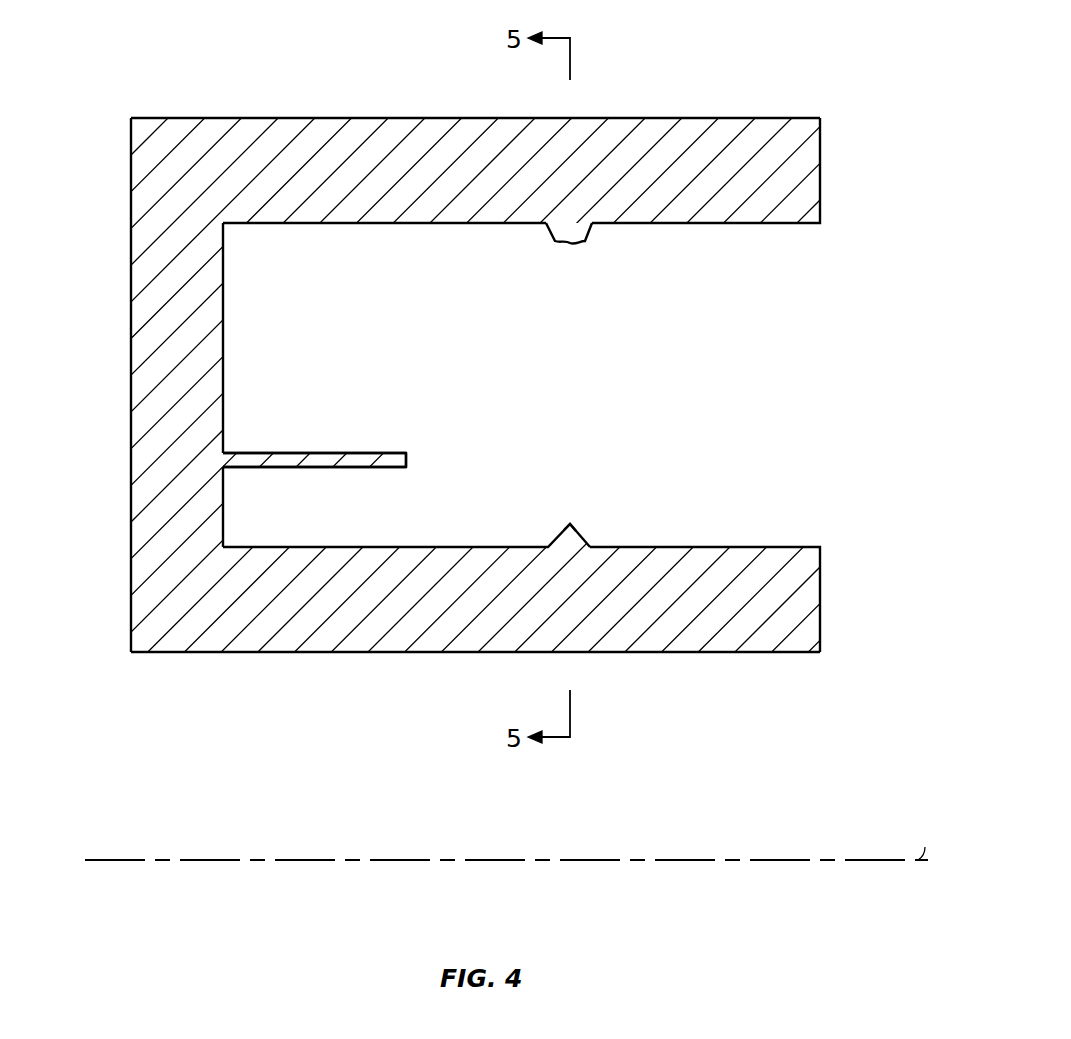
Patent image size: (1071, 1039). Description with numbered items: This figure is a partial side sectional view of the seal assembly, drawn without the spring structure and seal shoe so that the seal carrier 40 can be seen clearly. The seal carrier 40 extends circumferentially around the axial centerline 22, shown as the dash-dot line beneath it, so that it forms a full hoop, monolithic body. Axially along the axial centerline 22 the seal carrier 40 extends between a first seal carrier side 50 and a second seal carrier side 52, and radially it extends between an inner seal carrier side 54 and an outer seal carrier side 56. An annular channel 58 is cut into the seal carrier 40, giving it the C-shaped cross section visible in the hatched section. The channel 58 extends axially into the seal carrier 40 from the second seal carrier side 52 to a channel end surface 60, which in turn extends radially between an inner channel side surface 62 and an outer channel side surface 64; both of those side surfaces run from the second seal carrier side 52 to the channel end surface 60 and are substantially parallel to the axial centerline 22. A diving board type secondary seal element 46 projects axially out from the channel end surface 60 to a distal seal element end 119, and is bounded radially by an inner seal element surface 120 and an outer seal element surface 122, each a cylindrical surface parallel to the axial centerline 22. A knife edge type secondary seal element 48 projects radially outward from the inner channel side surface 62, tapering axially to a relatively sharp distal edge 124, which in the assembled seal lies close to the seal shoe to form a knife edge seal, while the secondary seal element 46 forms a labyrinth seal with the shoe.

The seal carrier 40 is at (816, 74).
The first seal carrier side 50 is at (131, 173).
The second seal carrier side 52 is at (820, 173).
The inner seal carrier side 54 is at (220, 652).
The outer seal carrier side 56 is at (210, 117).
The channel 58 is at (771, 335).
The channel end surface 60 is at (223, 318).
The inner channel side surface 62 is at (801, 547).
The outer channel side surface 64 is at (797, 223).
The secondary seal element 46 is at (370, 453).
The secondary seal element 48 is at (584, 533).
The distal seal element end 119 is at (406, 460).
The inner seal element surface 120 is at (290, 467).
The outer seal element surface 122 is at (288, 453).
The distal edge 124 is at (570, 522).
The axial centerline 22 is at (922, 856).